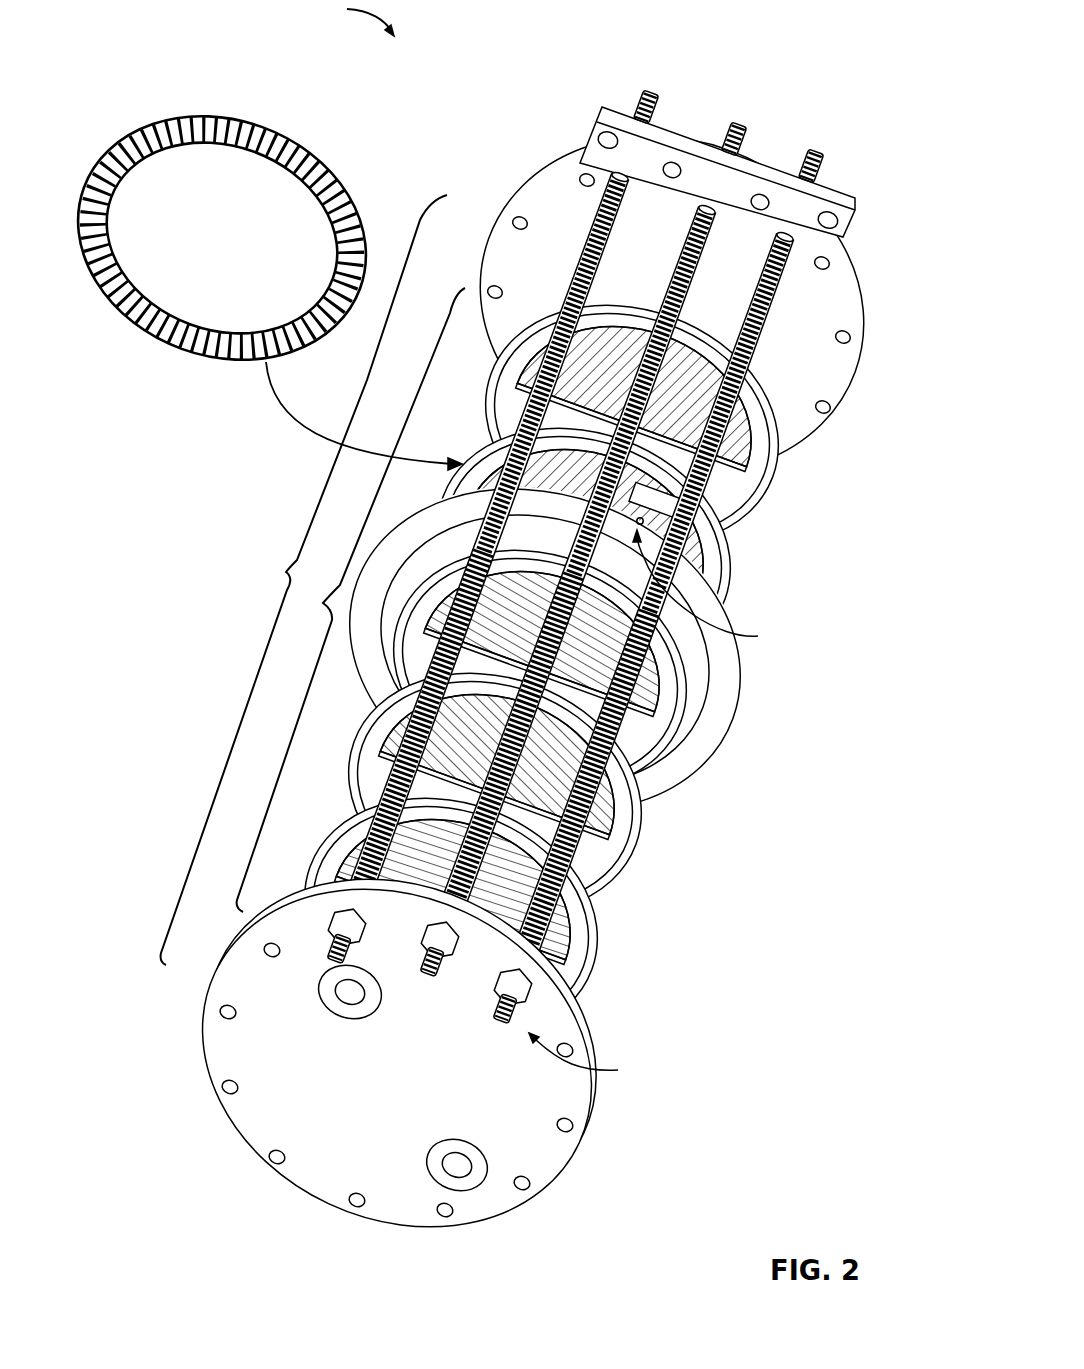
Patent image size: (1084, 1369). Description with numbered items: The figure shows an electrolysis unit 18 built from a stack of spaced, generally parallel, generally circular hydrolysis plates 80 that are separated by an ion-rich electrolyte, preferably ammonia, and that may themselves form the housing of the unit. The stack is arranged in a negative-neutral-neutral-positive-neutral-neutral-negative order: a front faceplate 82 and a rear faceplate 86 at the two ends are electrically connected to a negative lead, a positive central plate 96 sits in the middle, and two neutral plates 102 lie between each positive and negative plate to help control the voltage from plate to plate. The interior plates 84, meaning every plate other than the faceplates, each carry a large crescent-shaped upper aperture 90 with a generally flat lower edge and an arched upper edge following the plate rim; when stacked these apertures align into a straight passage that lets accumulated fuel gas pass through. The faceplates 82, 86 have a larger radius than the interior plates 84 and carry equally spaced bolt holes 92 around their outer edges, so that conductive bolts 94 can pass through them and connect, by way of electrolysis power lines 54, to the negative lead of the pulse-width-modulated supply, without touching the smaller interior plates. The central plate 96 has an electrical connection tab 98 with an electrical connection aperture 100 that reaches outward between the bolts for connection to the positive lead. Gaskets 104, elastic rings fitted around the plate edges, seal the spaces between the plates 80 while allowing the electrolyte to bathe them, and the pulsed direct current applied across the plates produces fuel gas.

The electrolysis unit 18 is at (353, 18).
The electrolysis power lines 54 is at (659, 808).
The hydrolysis plates 80 is at (286, 572).
The front faceplate 82 is at (562, 1172).
The interior plates 84 is at (323, 603).
The rear faceplate 86 is at (855, 382).
The upper aperture 90 is at (735, 437).
The bolt holes 92 is at (830, 263).
The conductive bolts 94 is at (605, 172).
The central plate 96 is at (740, 745).
The electrical connection tab 98 is at (680, 500).
The electrical connection aperture 100 is at (650, 545).
The neutral plates 102 is at (505, 440).
The gaskets 104 is at (232, 123).